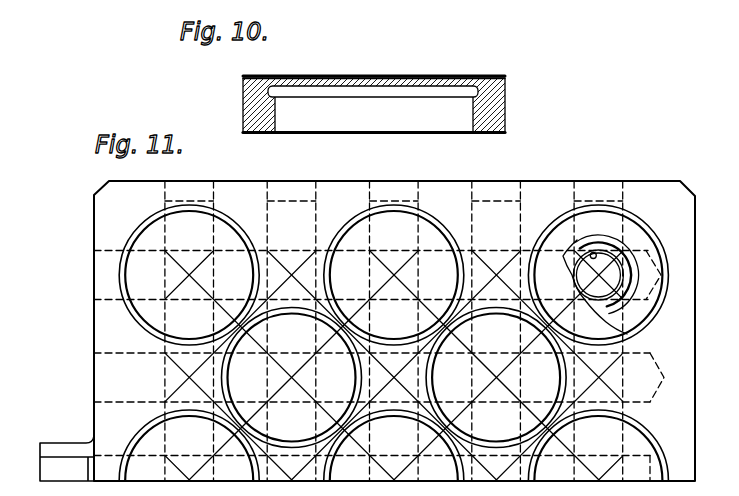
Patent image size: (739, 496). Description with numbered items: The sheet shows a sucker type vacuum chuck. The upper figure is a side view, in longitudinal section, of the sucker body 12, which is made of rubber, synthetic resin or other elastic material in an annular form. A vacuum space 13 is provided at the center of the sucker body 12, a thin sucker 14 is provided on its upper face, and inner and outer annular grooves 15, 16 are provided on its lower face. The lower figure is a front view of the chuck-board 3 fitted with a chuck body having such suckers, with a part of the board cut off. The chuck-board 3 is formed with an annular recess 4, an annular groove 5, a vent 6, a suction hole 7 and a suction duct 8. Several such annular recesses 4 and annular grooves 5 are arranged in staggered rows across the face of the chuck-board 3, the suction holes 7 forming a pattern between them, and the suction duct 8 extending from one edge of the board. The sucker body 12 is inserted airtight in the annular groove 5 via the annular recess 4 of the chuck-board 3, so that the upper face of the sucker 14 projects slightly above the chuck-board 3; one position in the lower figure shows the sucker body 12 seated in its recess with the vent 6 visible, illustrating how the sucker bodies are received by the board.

In FIG. 11, the chuck-board 3 is at (328, 204).
In FIG. 11, the annular recess 4 is at (137, 225).
In FIG. 11, the annular groove 5 is at (127, 276).
In FIG. 11, the vent 6 is at (595, 252).
In FIG. 11, the suction hole 7 is at (175, 443).
In FIG. 11, the suction duct 8 is at (48, 443).
In FIG. 10, the sucker body 12 is at (502, 113).
In FIG. 11, the sucker body 12 is at (553, 243).
In FIG. 10, the vacuum space 13 is at (471, 112).
In FIG. 10, the sucker 14 is at (377, 81).
In FIG. 10, the inner annular groove 15 is at (443, 93).
In FIG. 10, the outer annular groove 16 is at (505, 81).